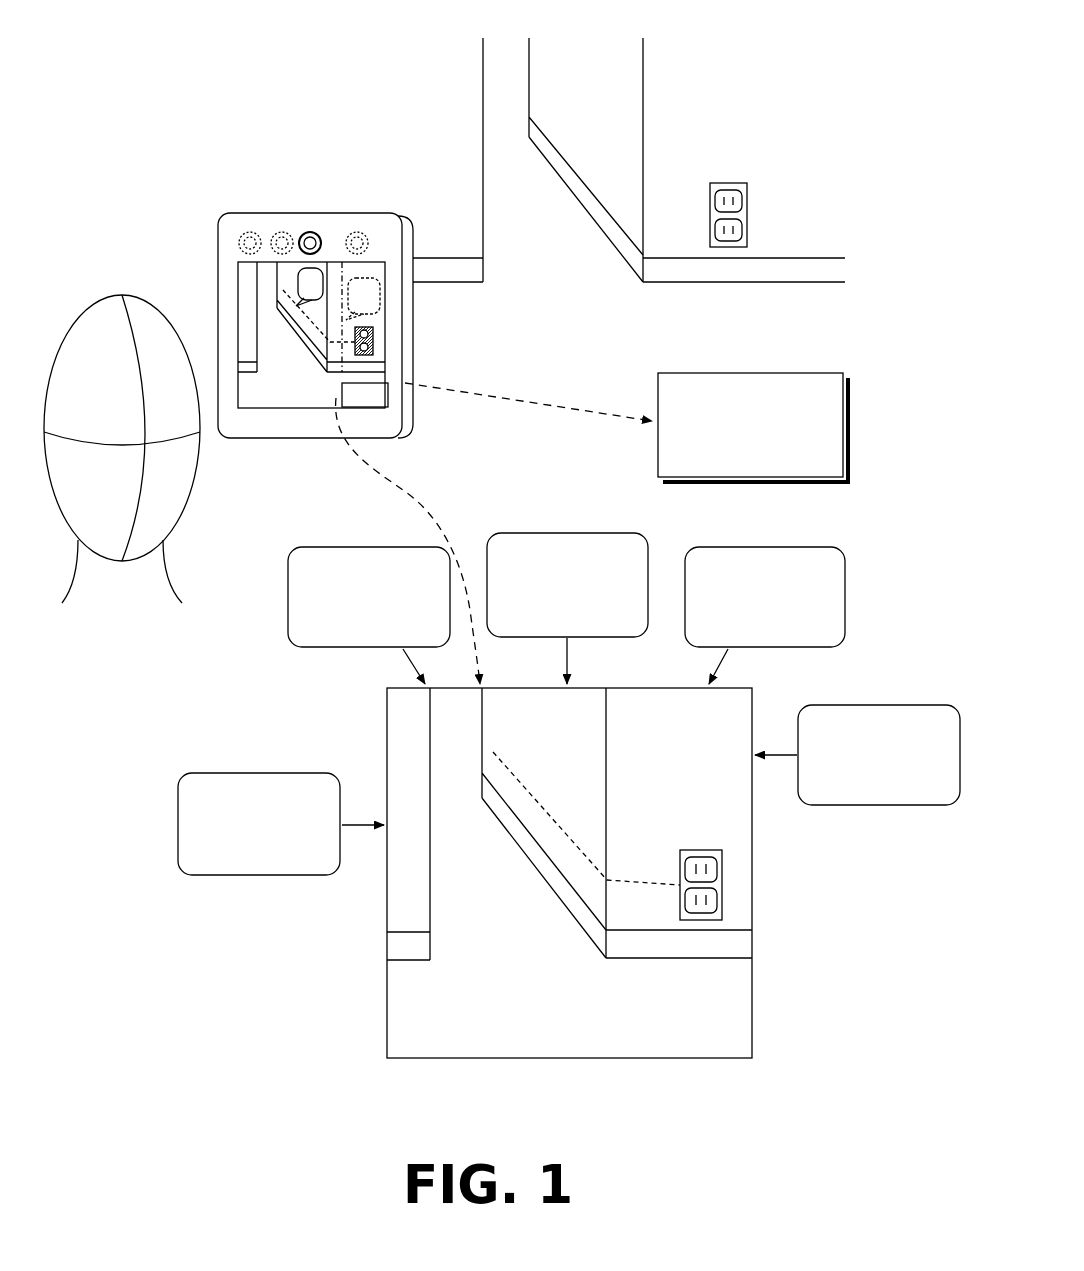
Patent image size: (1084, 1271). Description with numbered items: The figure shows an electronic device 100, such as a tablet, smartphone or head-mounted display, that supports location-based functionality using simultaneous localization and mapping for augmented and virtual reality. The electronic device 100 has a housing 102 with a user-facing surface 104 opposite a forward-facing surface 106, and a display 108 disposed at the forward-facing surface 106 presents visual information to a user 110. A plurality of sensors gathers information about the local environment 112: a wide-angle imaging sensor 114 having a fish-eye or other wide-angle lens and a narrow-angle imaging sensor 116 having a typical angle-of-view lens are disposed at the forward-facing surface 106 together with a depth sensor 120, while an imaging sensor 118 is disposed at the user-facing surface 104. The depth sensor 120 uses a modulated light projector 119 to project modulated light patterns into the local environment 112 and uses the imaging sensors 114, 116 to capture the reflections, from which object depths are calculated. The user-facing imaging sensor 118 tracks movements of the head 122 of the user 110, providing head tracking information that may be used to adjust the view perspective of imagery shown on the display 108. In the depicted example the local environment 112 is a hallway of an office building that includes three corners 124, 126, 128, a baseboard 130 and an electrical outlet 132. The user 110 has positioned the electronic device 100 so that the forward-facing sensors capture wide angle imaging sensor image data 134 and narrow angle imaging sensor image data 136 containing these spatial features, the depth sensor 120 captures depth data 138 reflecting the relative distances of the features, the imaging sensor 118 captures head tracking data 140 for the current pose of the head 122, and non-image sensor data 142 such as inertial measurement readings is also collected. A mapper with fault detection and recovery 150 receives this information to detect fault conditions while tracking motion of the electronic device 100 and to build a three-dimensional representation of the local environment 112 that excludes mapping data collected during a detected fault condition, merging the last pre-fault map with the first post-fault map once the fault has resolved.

The electronic device 100 is at (320, 324).
The housing 102 is at (414, 345).
The surface 104 is at (282, 430).
The surface 106 is at (419, 415).
The display 108 is at (365, 395).
The user 110 is at (122, 455).
The local environment 112 is at (616, 499).
The wide-angle imaging sensor 114 is at (247, 234).
The narrow-angle imaging sensor 116 is at (367, 231).
The imaging sensor 118 is at (319, 231).
The modulated light projector 119 is at (288, 233).
The depth sensor 120 is at (268, 227).
The head 122 is at (82, 312).
The corner 124 is at (484, 242).
The corner 126 is at (645, 112).
The corner 128 is at (531, 79).
The baseboard 130 is at (620, 237).
The electrical outlet 132 is at (748, 210).
The wide angle imaging sensor image data 134 is at (260, 772).
The narrow angle imaging sensor image data 136 is at (368, 546).
The depth data 138 is at (578, 532).
The head tracking data 140 is at (765, 546).
The non-image sensor data 142 is at (887, 704).
The mapper with fault detection and recovery 150 is at (753, 427).